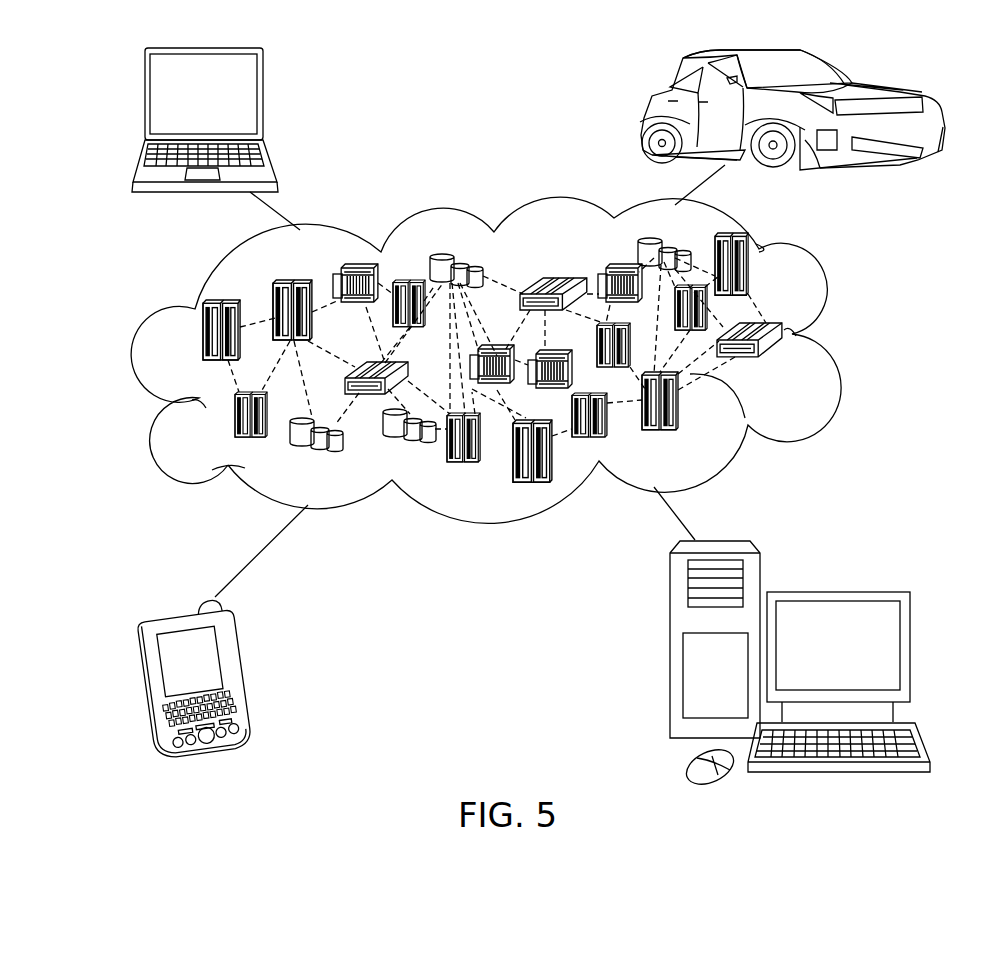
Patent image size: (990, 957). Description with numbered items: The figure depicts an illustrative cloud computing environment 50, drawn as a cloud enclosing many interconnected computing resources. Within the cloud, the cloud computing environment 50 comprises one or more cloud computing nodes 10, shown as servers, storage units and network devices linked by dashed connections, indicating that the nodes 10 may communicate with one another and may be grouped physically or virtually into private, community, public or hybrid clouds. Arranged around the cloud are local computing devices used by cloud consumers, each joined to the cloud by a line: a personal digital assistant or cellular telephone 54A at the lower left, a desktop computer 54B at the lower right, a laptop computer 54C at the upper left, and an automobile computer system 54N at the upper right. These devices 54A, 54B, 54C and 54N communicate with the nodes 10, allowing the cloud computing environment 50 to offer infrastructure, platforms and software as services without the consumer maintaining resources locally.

The cloud computing node 10 is at (787, 365).
The cloud computing environment 50 is at (837, 341).
The personal digital assistant or cellular telephone 54A is at (257, 668).
The desktop computer 54B is at (838, 590).
The laptop computer 54C is at (264, 102).
The automobile computer system 54N is at (645, 113).